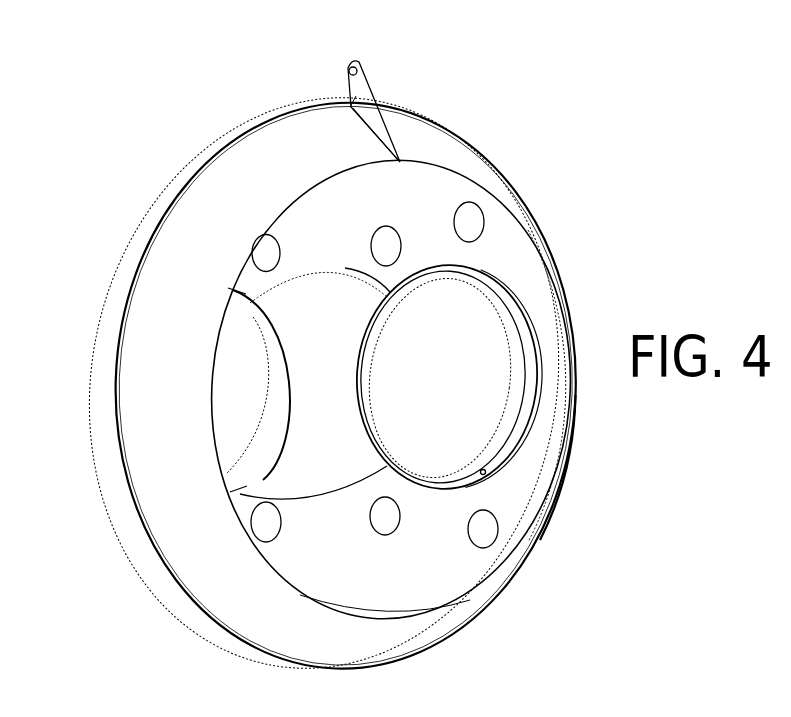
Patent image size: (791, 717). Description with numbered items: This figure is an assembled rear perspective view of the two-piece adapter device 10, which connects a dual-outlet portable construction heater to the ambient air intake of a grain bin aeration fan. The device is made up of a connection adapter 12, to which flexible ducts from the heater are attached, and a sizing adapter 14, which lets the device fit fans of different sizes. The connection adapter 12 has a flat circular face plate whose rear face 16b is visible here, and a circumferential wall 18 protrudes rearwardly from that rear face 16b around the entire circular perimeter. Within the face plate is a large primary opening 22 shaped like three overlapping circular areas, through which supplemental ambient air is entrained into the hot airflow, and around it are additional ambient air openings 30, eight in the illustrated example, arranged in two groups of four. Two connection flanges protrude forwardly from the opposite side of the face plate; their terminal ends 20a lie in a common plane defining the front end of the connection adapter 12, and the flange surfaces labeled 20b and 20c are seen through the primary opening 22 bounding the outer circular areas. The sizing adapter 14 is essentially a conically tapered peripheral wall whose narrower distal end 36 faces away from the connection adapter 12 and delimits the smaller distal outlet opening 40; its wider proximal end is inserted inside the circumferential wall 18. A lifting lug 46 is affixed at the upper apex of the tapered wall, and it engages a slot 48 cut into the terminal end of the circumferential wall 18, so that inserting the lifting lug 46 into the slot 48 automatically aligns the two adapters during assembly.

The adapter device 10 is at (370, 367).
The connection adapter 12 is at (318, 383).
The sizing adapter 14 is at (619, 370).
The rear face 16b is at (408, 389).
The circumferential wall 18 is at (325, 385).
The terminal ends of the connection flanges 20a is at (440, 378).
The bearing ring 20b is at (379, 377).
The connecting cylinder 20c is at (320, 303).
The primary opening 22 is at (315, 516).
The ambient air openings 30 is at (418, 406).
The distal end 36 is at (600, 467).
The distal outlet opening 40 is at (410, 620).
The lifting lug 46 is at (327, 94).
The slot 48 is at (397, 81).